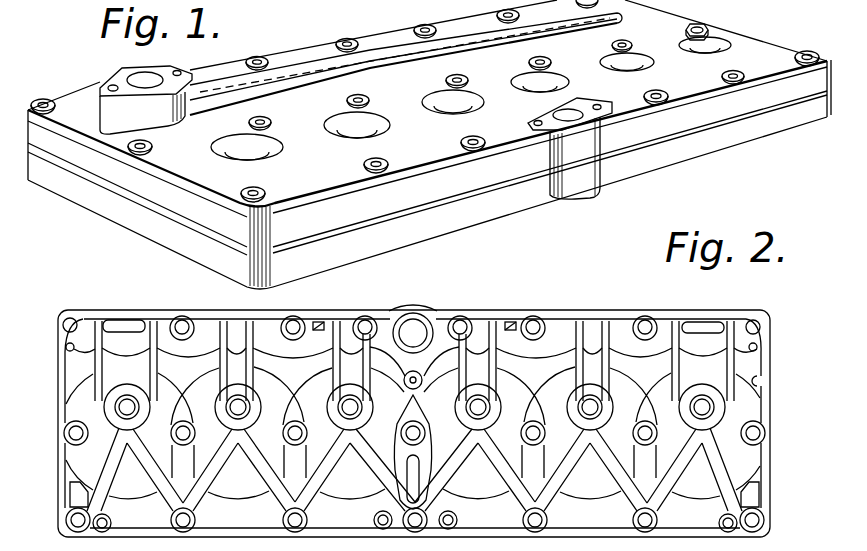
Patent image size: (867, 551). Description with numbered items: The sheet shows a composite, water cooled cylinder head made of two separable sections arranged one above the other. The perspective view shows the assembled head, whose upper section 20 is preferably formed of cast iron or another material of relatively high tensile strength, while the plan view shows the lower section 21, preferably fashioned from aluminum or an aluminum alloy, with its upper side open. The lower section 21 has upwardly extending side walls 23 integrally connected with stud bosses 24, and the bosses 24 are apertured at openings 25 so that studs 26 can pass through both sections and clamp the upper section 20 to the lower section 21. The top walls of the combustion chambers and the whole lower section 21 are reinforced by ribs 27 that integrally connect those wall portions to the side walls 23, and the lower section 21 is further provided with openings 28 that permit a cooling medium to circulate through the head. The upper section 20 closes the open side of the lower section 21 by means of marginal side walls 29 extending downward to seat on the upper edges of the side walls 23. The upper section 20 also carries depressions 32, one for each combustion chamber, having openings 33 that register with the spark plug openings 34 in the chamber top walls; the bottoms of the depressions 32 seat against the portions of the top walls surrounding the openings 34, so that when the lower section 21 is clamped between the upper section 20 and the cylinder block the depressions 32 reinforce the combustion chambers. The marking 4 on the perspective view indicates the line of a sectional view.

In FIG. 1, the section line indicator 4 is at (845, 70).
In FIG. 1, the upper section 20 is at (113, 168).
In FIG. 1, the lower section 21 is at (147, 227).
In FIG. 2, the lower section 21 is at (480, 311).
In FIG. 2, the side walls 23 is at (575, 313).
In FIG. 2, the stud bosses 24 is at (563, 313).
In FIG. 2, the openings 25 is at (535, 321).
In FIG. 1, the studs 26 is at (813, 53).
In FIG. 2, the ribs 27 is at (163, 392).
In FIG. 2, the openings 28 is at (133, 321).
In FIG. 1, the marginal side walls 29 is at (448, 188).
In FIG. 1, the depressions 32 is at (337, 125).
In FIG. 1, the openings 33 is at (448, 110).
In FIG. 2, the spark plug openings 34 is at (340, 403).